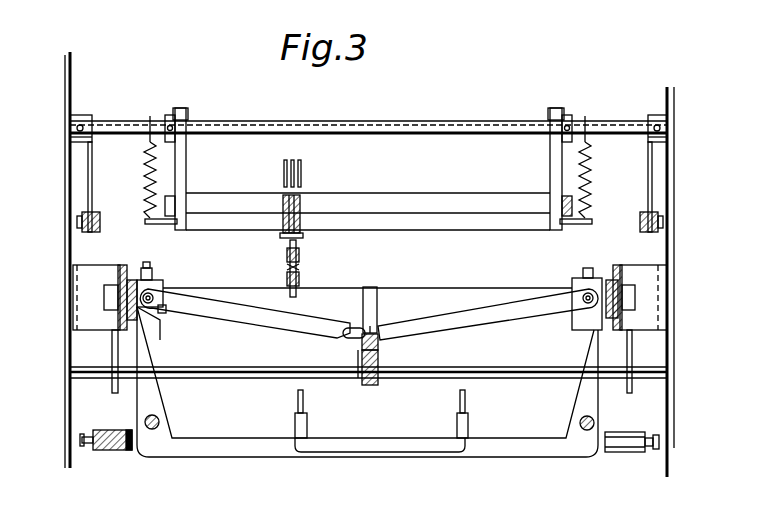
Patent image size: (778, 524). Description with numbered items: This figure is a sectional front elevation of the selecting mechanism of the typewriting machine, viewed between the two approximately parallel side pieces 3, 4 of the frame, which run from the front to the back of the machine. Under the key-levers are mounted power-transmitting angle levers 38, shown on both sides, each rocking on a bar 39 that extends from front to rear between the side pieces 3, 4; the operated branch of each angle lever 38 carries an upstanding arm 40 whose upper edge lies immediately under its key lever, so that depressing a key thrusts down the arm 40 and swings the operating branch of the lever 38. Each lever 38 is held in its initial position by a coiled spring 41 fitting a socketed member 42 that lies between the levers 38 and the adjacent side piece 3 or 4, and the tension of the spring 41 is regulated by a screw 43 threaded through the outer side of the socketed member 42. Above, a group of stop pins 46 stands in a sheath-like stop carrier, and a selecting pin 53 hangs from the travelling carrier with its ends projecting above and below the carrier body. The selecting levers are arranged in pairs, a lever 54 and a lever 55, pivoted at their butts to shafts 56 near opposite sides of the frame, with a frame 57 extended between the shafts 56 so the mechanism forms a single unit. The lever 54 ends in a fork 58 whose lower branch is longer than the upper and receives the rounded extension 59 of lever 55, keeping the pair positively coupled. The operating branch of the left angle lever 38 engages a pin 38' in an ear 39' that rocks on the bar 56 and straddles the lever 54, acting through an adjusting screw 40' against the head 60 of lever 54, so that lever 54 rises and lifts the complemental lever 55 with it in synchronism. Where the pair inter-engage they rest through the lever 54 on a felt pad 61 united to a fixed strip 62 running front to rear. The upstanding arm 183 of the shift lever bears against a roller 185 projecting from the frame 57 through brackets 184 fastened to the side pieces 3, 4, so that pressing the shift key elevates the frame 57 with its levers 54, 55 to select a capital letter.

The side piece 3 is at (62, 424).
The side piece 4 is at (675, 408).
The angle lever 38 is at (367, 404).
The pin 38' is at (162, 330).
The bar 39 is at (388, 415).
The ear 39' is at (175, 313).
The upstanding arm 40 is at (397, 421).
The adjusting screw 40' is at (149, 252).
The coiled spring 41 is at (132, 451).
The socketed member 42 is at (108, 452).
The screw 43 is at (86, 446).
The stop pin 46 is at (302, 222).
The selecting pin 53 is at (300, 291).
The lever 54 is at (246, 318).
The lever 55 is at (470, 318).
The shaft 56 is at (154, 296).
The frame 57 is at (390, 297).
The fork 58 is at (346, 337).
The extension 59 is at (380, 340).
The head 60 is at (152, 280).
The pad 61 is at (358, 378).
The fixed strip 62 is at (372, 386).
The upstanding arm 183 is at (112, 354).
The bracket 184 is at (118, 258).
The roller 185 is at (116, 292).